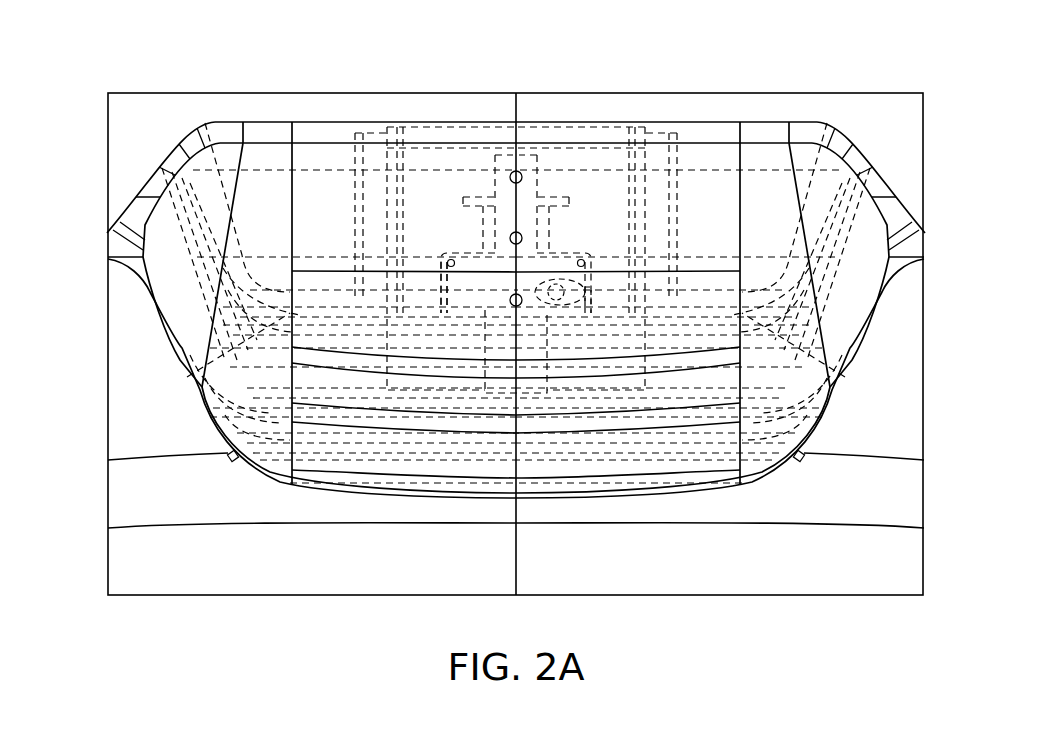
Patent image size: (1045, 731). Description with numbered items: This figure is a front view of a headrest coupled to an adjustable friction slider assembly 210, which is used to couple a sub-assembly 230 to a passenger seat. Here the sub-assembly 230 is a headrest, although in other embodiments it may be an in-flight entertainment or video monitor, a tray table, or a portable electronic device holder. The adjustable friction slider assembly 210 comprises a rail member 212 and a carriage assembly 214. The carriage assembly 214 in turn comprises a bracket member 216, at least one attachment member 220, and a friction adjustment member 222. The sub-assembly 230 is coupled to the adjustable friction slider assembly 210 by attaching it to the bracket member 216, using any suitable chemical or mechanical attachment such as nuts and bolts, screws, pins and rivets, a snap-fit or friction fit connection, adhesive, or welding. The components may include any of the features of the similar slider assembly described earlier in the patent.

The adjustable friction slider assembly 210 is at (585, 208).
The rail member 212 is at (497, 385).
The carriage assembly 214 is at (457, 305).
The bracket member 216 is at (508, 207).
The attachment member 220 is at (558, 296).
The friction adjustment member 222 is at (593, 300).
The sub-assembly 230 is at (210, 162).